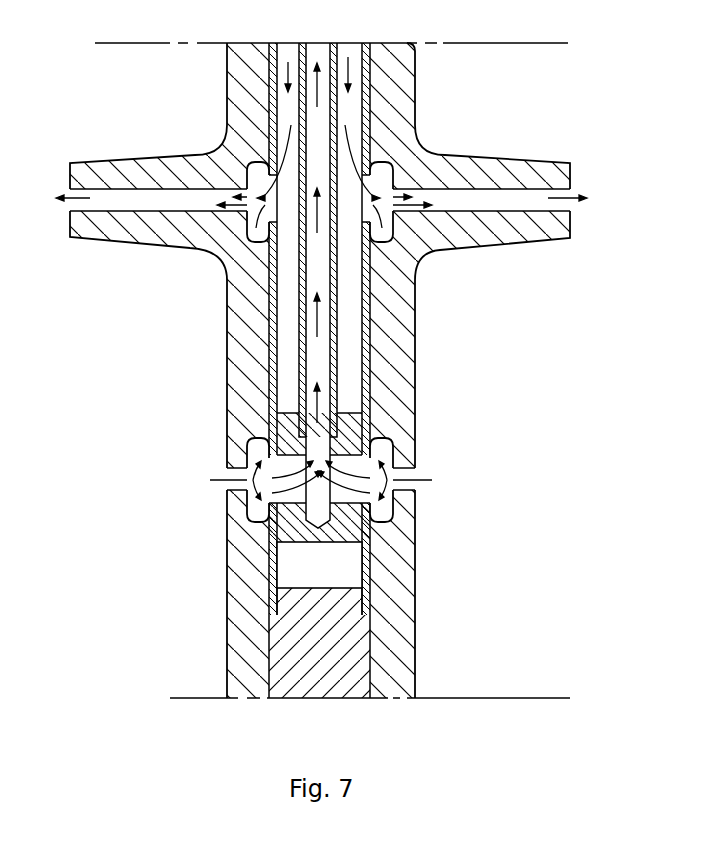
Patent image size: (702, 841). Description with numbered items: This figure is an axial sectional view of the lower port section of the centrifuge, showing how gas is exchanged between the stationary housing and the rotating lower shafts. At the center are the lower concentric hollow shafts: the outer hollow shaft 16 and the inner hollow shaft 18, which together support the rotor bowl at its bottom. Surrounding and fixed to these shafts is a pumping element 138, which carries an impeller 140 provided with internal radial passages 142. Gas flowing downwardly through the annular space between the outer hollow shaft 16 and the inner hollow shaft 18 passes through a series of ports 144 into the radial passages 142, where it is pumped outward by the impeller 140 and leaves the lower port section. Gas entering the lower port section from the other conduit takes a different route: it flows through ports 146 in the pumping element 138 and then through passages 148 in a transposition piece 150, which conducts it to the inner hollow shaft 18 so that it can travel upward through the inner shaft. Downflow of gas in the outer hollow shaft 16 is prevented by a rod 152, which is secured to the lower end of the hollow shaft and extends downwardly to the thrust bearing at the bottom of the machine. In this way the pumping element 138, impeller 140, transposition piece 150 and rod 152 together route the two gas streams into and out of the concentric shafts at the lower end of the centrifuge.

The pumping element 138 is at (417, 85).
The impeller 140 is at (467, 170).
The internal radial passages 142 is at (563, 203).
The ports 144 is at (368, 180).
The outer hollow shaft 16 is at (367, 357).
The inner hollow shaft 18 is at (364, 252).
The transposition piece 150 is at (353, 418).
The ports 146 is at (373, 470).
The passages 148 is at (352, 485).
The rod 152 is at (339, 589).